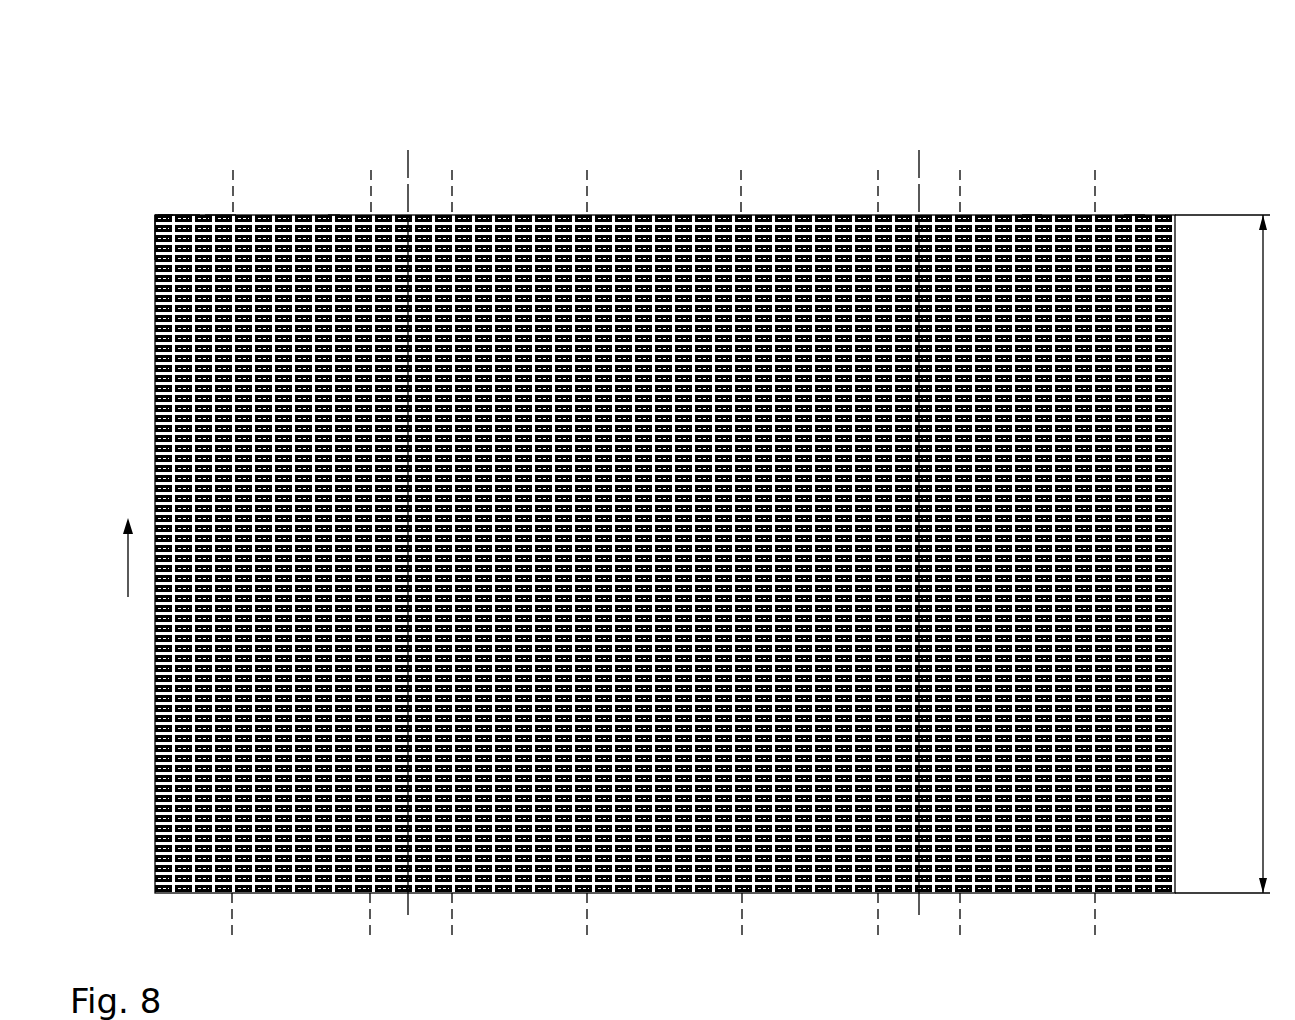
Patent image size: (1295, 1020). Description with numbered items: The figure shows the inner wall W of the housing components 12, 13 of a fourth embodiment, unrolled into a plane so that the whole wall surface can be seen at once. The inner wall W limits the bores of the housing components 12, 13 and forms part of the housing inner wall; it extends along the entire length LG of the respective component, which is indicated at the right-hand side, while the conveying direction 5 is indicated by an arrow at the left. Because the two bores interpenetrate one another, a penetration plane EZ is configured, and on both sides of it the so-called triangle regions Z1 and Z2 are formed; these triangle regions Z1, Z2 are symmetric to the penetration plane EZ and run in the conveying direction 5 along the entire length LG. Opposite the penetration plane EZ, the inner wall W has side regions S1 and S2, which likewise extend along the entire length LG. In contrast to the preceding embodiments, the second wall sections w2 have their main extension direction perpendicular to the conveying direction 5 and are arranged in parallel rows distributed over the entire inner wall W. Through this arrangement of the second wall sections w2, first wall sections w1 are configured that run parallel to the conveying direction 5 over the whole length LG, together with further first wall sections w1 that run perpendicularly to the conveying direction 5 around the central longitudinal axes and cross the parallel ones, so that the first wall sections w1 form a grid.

The inner wall W is at (155, 370).
The housing component 12 is at (122, 218).
The housing component 13 is at (117, 213).
The first wall sections w1 is at (173, 220).
The second wall sections w2 is at (236, 222).
The penetration plane EZ is at (668, 521).
The triangle region Z1 is at (960, 933).
The triangle region Z2 is at (453, 933).
The side region S1 is at (742, 933).
The side region S2 is at (232, 933).
The length of the housing component LG is at (1222, 554).
The conveying direction 5 is at (128, 558).